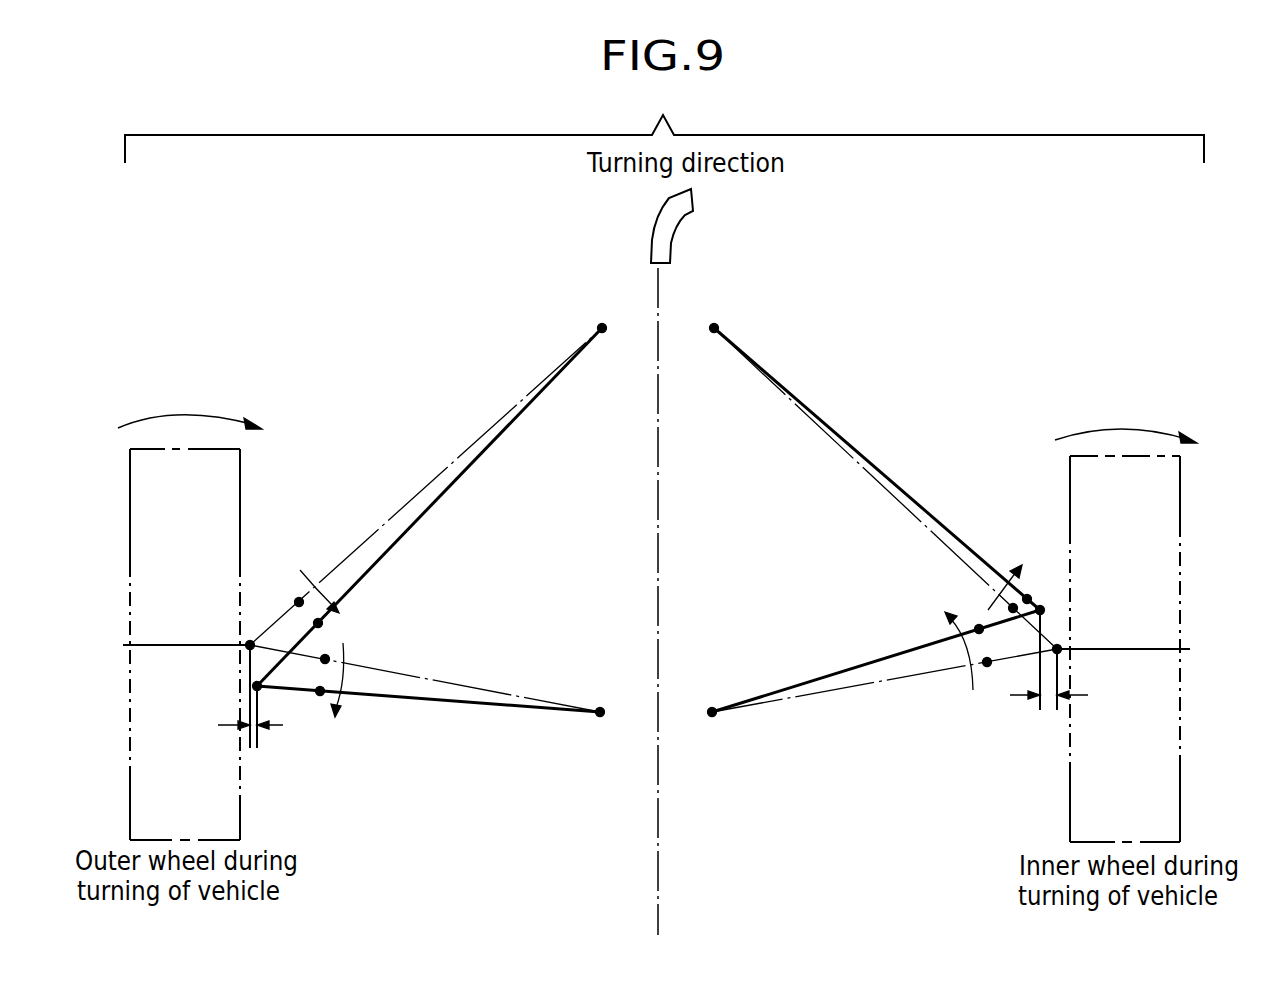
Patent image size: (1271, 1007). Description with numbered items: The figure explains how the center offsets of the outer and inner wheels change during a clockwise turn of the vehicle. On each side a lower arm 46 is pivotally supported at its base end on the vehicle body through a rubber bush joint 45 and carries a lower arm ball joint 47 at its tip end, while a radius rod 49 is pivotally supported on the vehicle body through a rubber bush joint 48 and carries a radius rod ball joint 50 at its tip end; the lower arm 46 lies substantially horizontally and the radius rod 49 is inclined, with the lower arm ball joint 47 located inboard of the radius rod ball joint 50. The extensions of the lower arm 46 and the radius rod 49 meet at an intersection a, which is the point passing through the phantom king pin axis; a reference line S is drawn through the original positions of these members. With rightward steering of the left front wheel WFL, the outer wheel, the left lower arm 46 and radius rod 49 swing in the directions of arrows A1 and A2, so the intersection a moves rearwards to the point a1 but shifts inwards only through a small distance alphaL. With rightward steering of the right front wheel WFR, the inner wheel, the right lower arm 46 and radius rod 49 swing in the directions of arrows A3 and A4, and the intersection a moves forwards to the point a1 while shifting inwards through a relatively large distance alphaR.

The rubber bush joint 45 is at (600, 713).
The lower arm 46 is at (440, 700).
The lower arm ball joint 47 is at (320, 692).
The rubber bush joint 48 is at (602, 328).
The radius rod 49 is at (445, 492).
The radius rod ball joint 50 is at (320, 623).
The reference straight line S is at (486, 424).
The left front wheel WFL is at (240, 516).
The right front wheel WFR is at (1070, 490).
The arrow A1 is at (338, 690).
The arrow A2 is at (334, 596).
The arrow A3 is at (962, 646).
The arrow A4 is at (1000, 592).
The distance alphaL is at (257, 748).
The distance alphaR is at (1040, 714).
The intersection a is at (250, 645).
The point a1 is at (258, 686).